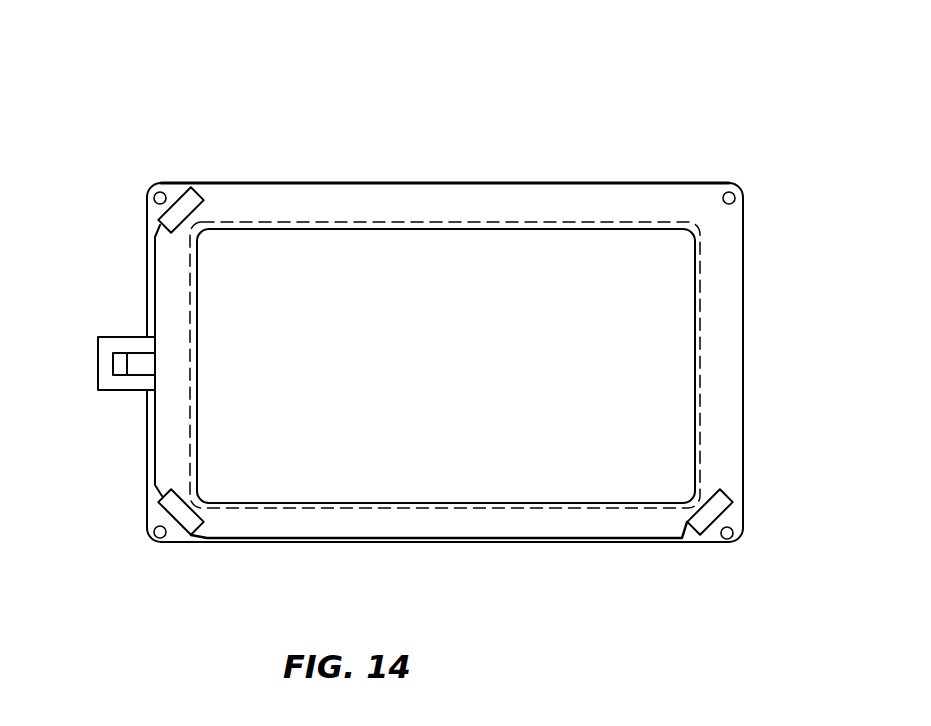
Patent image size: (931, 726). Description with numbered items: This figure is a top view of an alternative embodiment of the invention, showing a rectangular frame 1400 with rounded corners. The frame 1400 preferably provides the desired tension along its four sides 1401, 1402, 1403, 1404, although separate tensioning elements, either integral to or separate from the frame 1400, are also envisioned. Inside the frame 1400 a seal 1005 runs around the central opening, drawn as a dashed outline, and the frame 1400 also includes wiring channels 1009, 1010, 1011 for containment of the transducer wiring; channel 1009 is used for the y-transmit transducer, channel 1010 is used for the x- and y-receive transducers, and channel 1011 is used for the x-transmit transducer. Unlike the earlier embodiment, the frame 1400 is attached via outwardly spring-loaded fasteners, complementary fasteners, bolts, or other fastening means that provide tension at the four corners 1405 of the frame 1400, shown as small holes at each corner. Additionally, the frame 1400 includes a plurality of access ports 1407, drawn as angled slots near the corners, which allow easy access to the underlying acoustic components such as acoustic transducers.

The frame 1400 is at (548, 156).
The side 1401 is at (402, 188).
The side 1402 is at (733, 363).
The side 1403 is at (478, 528).
The side 1404 is at (170, 260).
The corner 1405 is at (165, 190).
The access port 1407 is at (203, 198).
The seal 1005 is at (447, 503).
The wiring channel 1009 is at (343, 540).
The wiring channel 1010 is at (148, 440).
The wiring channel 1011 is at (148, 307).